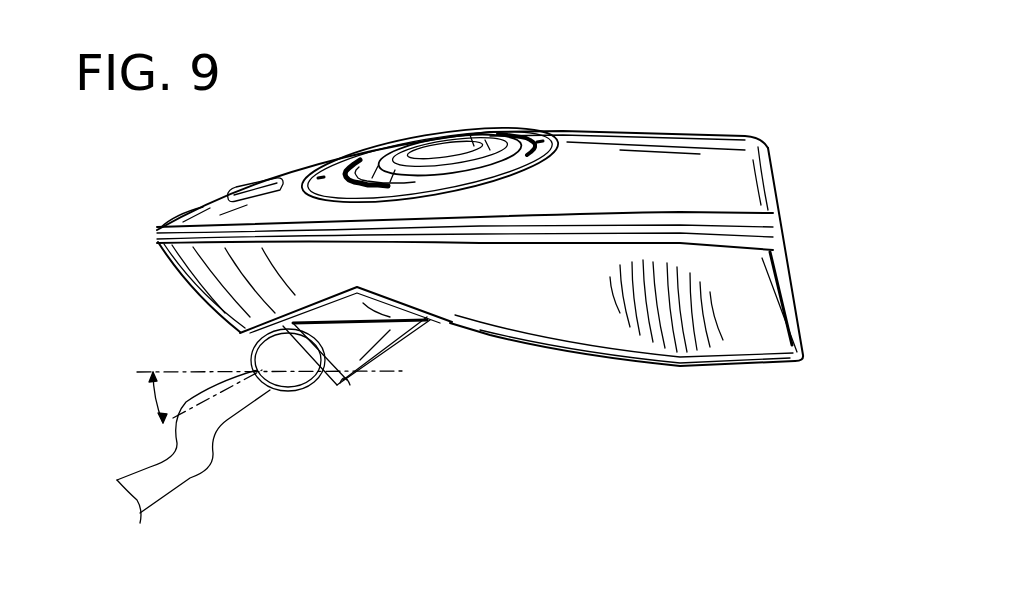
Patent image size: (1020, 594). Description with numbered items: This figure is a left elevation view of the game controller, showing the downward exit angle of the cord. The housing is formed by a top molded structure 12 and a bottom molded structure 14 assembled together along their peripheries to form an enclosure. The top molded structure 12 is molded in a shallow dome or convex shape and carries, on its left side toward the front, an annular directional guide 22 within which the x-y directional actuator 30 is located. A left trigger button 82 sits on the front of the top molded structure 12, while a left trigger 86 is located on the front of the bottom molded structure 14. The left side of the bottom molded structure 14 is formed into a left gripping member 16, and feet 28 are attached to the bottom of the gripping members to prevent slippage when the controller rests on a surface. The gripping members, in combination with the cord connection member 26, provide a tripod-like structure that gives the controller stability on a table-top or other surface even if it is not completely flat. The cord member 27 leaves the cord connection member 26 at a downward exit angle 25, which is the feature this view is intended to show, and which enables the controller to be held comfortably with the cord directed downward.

The top molded structure 12 is at (700, 157).
The bottom molded structure 14 is at (600, 355).
The left gripping member 16 is at (733, 320).
The annular directional guide 22 is at (527, 140).
The downward exit angle 25 is at (150, 403).
The cord connection member 26 is at (293, 380).
The cord member 27 is at (173, 487).
The feet 28 is at (690, 365).
The x-y directional actuator 30 is at (427, 143).
The left trigger button 82 is at (261, 183).
The left trigger 86 is at (373, 310).